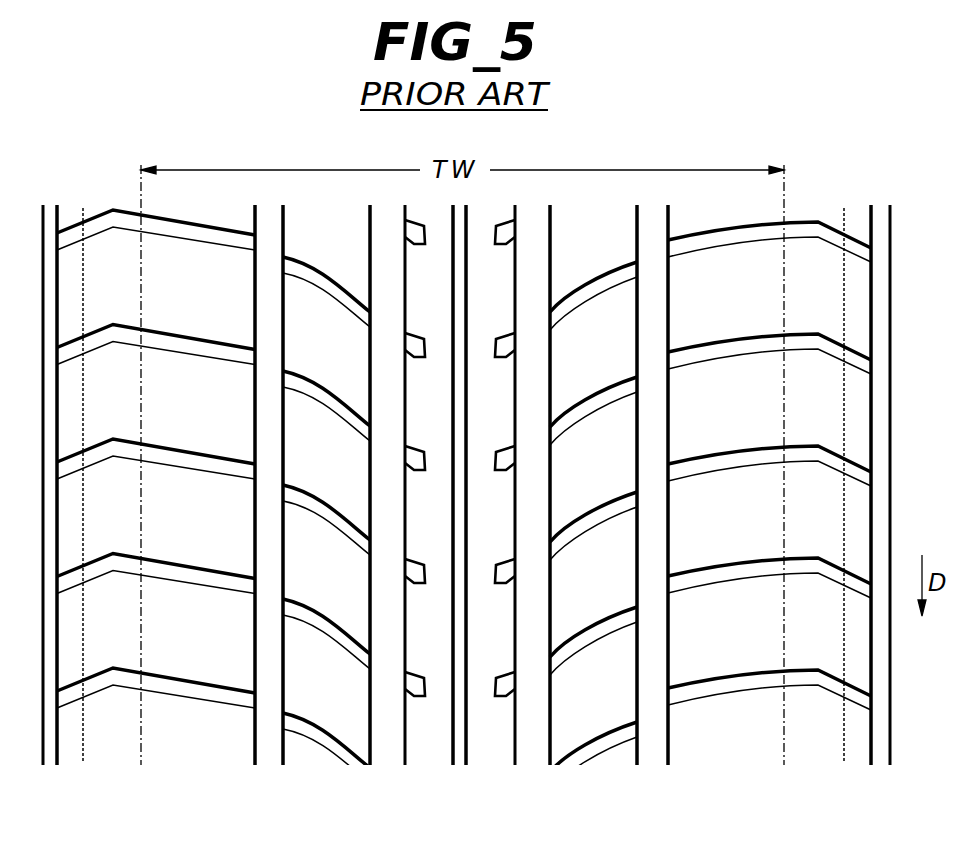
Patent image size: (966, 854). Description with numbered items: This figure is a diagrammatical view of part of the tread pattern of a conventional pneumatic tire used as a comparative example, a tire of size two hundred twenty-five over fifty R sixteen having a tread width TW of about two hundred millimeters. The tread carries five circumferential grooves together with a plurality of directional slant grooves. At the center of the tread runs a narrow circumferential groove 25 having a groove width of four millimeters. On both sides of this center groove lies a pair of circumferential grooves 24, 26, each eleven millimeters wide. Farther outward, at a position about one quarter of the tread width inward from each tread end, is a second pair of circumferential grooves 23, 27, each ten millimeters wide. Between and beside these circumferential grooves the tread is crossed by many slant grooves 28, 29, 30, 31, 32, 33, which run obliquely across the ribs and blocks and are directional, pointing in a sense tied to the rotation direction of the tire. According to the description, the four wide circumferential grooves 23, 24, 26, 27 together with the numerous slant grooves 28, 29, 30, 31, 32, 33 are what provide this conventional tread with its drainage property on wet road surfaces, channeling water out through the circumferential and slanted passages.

The circumferential groove 23 is at (267, 740).
The circumferential groove 24 is at (387, 747).
The circumferential groove 25 is at (457, 752).
The circumferential groove 26 is at (532, 747).
The circumferential groove 27 is at (650, 747).
The slant groove 28 is at (190, 232).
The slant groove 29 is at (331, 289).
The slant groove 30 is at (413, 347).
The slant groove 31 is at (503, 347).
The slant groove 32 is at (592, 290).
The slant groove 33 is at (734, 238).